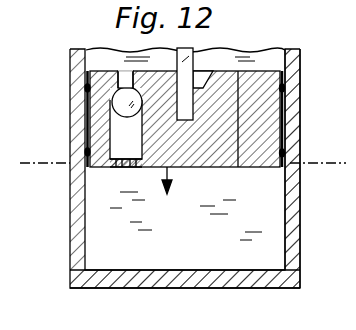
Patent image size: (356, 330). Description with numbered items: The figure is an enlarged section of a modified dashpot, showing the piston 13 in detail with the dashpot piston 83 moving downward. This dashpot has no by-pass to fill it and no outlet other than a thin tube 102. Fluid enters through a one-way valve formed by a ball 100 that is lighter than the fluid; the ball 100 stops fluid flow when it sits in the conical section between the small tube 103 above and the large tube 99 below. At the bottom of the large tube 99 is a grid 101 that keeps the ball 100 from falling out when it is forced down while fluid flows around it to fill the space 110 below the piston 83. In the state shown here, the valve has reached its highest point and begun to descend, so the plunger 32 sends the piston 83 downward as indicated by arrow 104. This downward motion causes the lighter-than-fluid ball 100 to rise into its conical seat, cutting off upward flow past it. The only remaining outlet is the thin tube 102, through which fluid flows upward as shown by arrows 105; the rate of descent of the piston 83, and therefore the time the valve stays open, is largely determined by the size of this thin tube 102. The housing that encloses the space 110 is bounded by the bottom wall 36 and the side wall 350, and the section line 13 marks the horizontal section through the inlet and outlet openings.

The piston 13 is at (30, 168).
The plunger 32 is at (196, 53).
The bottom wall 36 is at (173, 276).
The piston 83 is at (265, 122).
The large tube 99 is at (127, 127).
The ball 100 is at (125, 100).
The grid 101 is at (110, 167).
The thin tube 102 is at (238, 148).
The small tube 103 is at (128, 72).
The arrow 104 is at (172, 189).
The arrows 105 is at (246, 62).
The space 110 is at (100, 245).
The side wall 350 is at (291, 237).